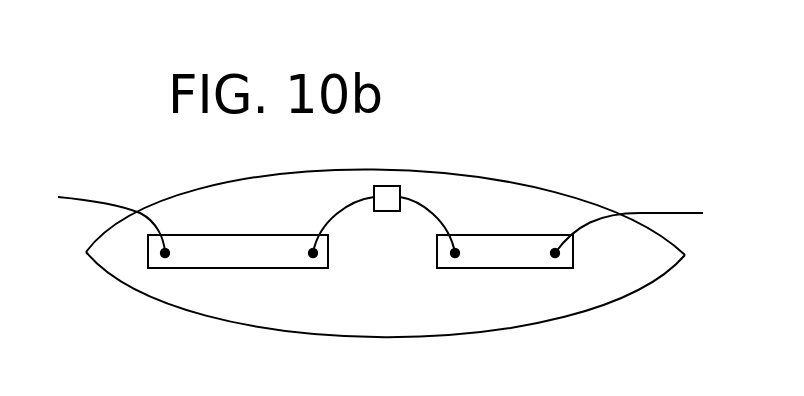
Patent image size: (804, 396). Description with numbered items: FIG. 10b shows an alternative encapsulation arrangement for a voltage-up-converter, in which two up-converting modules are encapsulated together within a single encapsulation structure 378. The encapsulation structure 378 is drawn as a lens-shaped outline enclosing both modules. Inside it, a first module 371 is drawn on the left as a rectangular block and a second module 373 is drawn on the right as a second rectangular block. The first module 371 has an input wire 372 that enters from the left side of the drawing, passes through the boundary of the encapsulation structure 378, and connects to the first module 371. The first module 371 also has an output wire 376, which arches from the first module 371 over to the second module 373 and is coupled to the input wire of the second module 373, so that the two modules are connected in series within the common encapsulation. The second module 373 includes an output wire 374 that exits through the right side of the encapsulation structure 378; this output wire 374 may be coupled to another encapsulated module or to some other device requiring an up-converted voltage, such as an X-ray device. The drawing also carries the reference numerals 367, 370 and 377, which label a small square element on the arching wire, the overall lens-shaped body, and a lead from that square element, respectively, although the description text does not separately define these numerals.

The sensor/chip 367 is at (387, 186).
The lens 370 is at (528, 340).
The first module 371 is at (285, 268).
The input wire 372 is at (90, 203).
The second module 373 is at (508, 268).
The output wire 374 is at (678, 215).
The output wire 376 is at (345, 208).
The chip package 377 is at (387, 211).
The encapsulation structure 378 is at (495, 180).